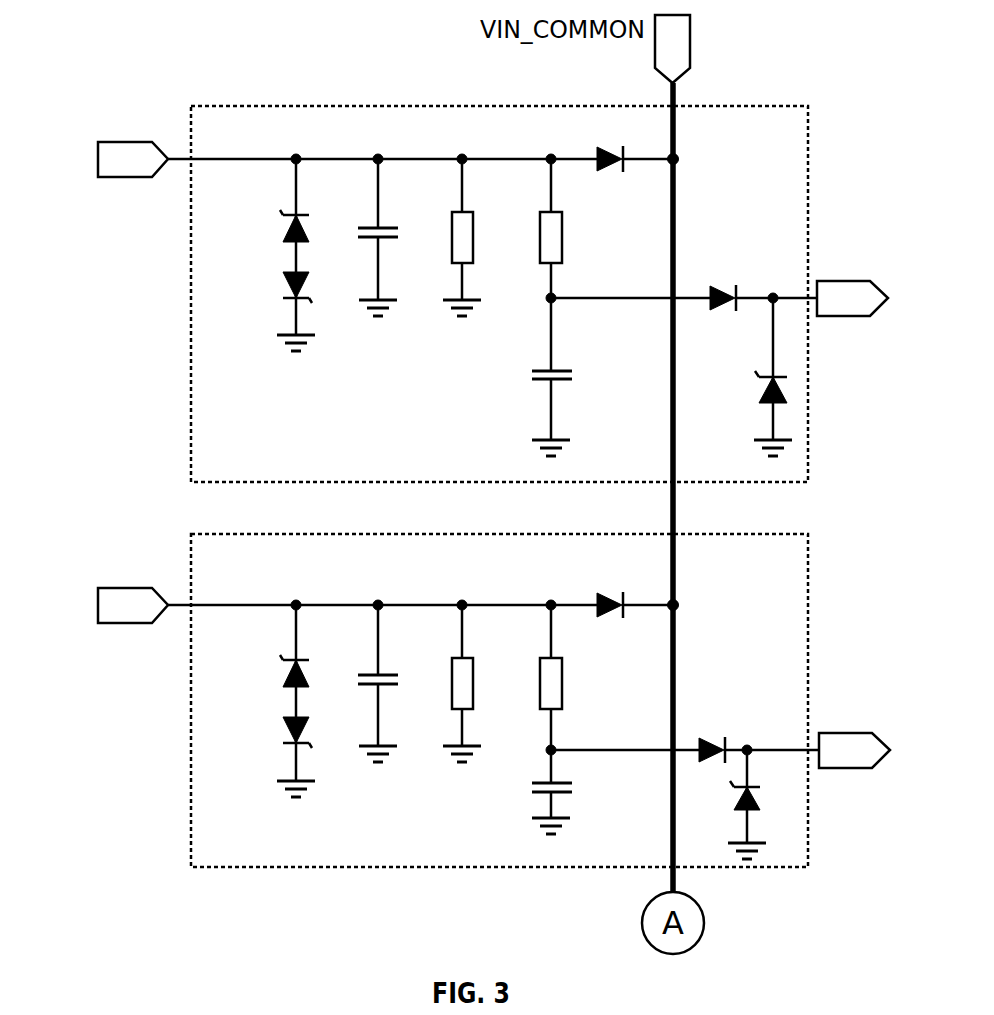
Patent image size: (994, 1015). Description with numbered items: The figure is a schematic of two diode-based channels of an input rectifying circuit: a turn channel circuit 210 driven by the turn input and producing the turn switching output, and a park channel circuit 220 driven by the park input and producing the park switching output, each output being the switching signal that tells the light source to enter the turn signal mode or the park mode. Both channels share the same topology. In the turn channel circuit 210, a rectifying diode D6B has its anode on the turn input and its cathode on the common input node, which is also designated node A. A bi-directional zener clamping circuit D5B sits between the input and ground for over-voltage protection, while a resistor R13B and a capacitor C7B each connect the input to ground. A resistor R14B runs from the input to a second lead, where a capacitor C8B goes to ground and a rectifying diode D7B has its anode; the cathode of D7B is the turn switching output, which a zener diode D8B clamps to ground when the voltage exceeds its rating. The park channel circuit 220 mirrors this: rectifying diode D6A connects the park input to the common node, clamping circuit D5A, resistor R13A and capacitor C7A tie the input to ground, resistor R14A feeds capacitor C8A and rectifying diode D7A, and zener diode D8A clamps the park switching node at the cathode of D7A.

The turn channel circuit 210 is at (243, 105).
The park channel circuit 220 is at (190, 534).
The bi-directional zener diode clamping circuit D5B is at (266, 255).
The capacitor C7B is at (394, 237).
The resistor R13B is at (482, 237).
The resistor R14B is at (583, 228).
The rectifying diode D6B is at (632, 145).
The capacitor C8B is at (567, 377).
The rectifying diode D7B is at (719, 286).
The zener diode D8B is at (748, 377).
The bi-directional zener diode clamping circuit D5A is at (266, 701).
The capacitor C7A is at (393, 683).
The resistor R13A is at (482, 683).
The resistor R14A is at (584, 677).
The rectifying diode D6A is at (632, 588).
The capacitor C8A is at (570, 792).
The rectifying diode D7A is at (711, 733).
The zener diode D8A is at (724, 804).